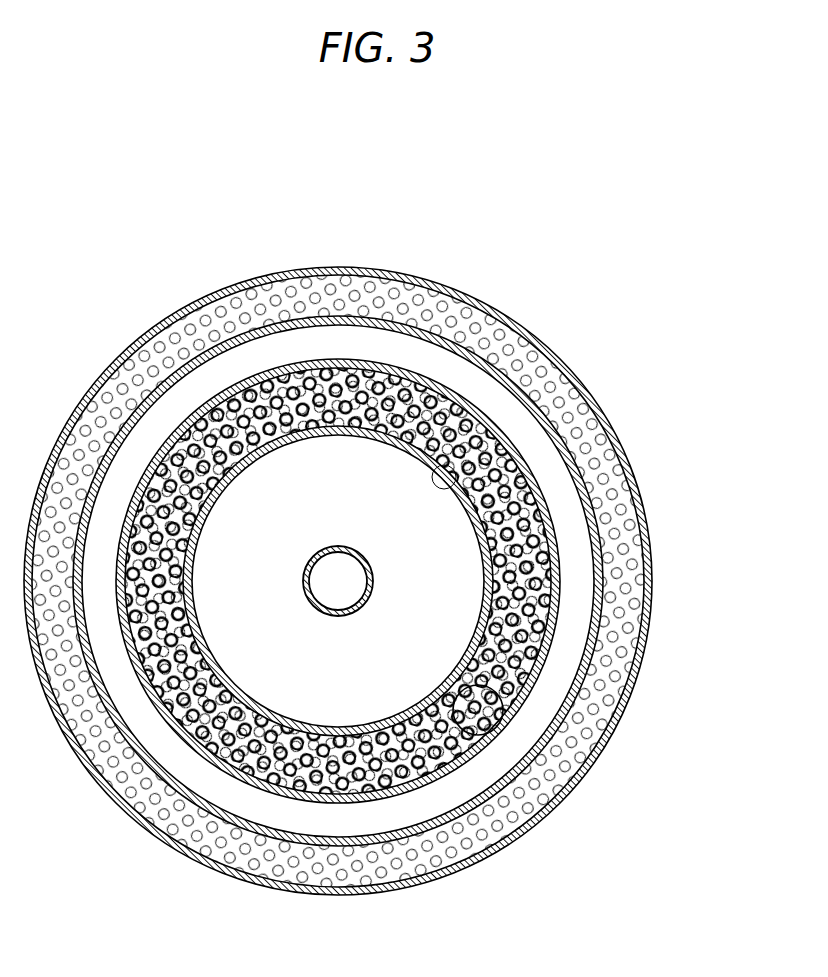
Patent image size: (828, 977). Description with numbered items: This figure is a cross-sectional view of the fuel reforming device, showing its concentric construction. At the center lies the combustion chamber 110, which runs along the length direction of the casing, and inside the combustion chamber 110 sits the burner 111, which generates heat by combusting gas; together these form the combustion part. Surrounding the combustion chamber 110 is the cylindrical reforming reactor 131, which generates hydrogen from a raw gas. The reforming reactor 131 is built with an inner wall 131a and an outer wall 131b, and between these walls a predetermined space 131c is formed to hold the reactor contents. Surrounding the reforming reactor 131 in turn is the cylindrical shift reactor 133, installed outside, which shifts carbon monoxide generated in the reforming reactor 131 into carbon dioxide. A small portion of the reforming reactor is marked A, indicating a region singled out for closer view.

The shift reactor 133 is at (223, 302).
The reforming reactor 131 is at (208, 415).
The inner wall 131a is at (458, 480).
The outer wall 131b is at (462, 397).
The predetermined space 131c is at (412, 403).
The combustion chamber 110 is at (445, 553).
The burner 111 is at (358, 588).
The detail region A is at (478, 737).